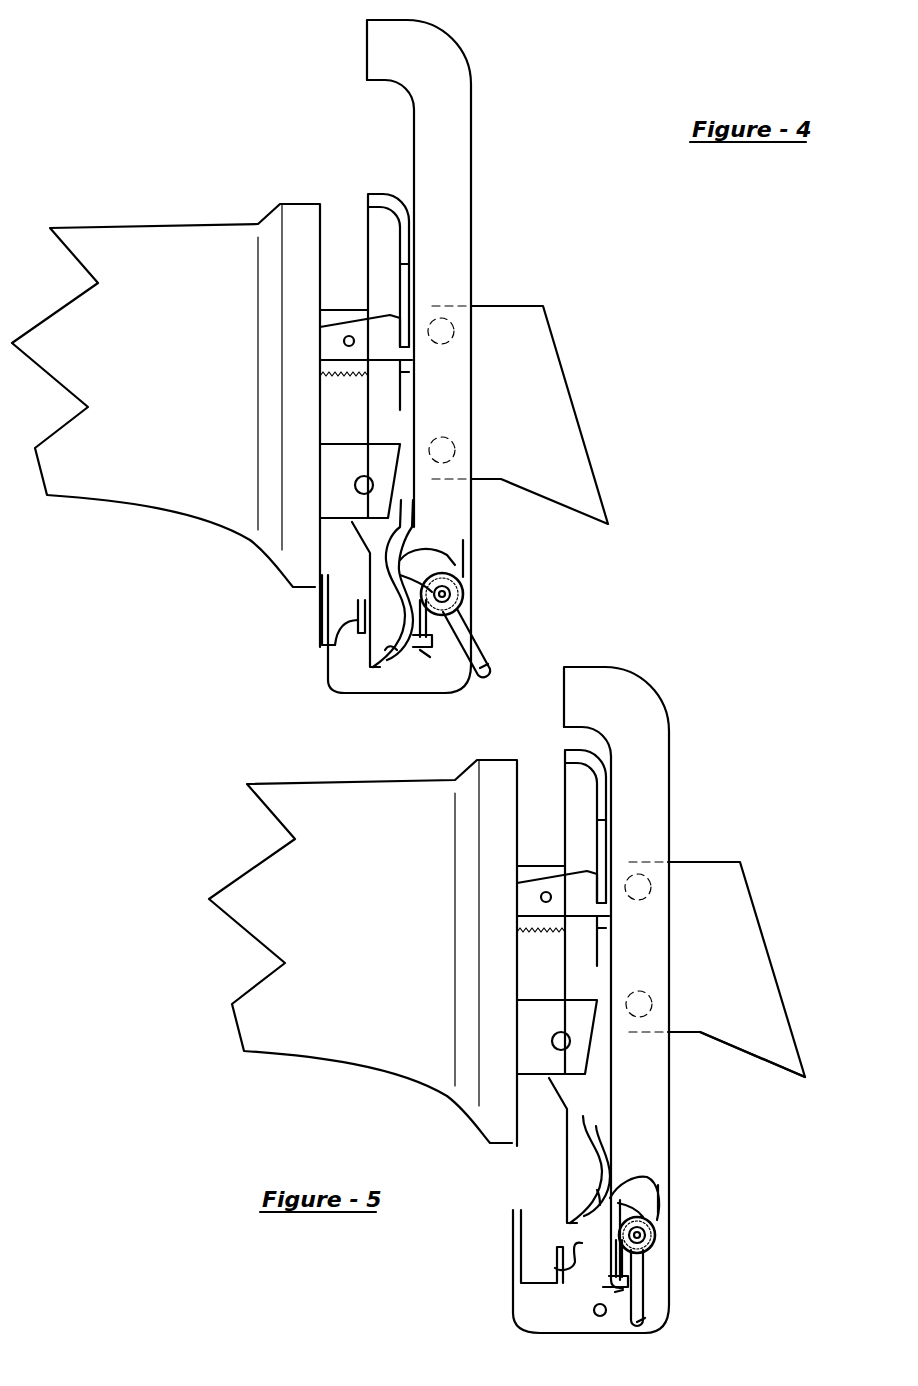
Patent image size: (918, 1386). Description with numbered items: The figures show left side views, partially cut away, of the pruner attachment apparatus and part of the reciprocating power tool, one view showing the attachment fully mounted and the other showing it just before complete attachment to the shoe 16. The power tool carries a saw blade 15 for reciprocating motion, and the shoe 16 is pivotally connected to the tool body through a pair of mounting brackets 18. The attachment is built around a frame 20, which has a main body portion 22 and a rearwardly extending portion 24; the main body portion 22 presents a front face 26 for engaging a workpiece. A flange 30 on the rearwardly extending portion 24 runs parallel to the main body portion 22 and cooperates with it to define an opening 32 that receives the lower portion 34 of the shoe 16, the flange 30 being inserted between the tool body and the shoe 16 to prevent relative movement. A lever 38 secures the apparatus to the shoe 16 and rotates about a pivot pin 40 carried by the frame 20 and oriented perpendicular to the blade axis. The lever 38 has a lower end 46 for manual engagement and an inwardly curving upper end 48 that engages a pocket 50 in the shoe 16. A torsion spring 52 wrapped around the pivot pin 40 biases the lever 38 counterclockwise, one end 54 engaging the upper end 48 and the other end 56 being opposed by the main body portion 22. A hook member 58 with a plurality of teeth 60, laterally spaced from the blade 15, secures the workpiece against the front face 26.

In FIG. 4, the saw blade 15 is at (333, 317).
In FIG. 5, the saw blade 15 is at (530, 873).
In FIG. 5, the shoe 16 is at (583, 760).
In FIG. 4, the mounting brackets 18 is at (333, 472).
In FIG. 5, the mounting brackets 18 is at (530, 1028).
In FIG. 4, the frame 20 is at (418, 382).
In FIG. 5, the frame 20 is at (620, 1001).
In FIG. 4, the main body portion 22 is at (456, 88).
In FIG. 5, the main body portion 22 is at (640, 722).
In FIG. 4, the rearwardly extending portion 24 is at (388, 699).
In FIG. 5, the rearwardly extending portion 24 is at (575, 1330).
In FIG. 4, the front face 26 is at (473, 233).
In FIG. 4, the flange 30 is at (317, 617).
In FIG. 5, the flange 30 is at (513, 1225).
In FIG. 4, the opening 32 is at (330, 655).
In FIG. 5, the opening 32 is at (582, 1243).
In FIG. 4, the lower portion 34 is at (397, 650).
In FIG. 5, the lower portion 34 is at (597, 1190).
In FIG. 4, the lever 38 is at (463, 600).
In FIG. 5, the lever 38 is at (647, 1275).
In FIG. 4, the pivot pin 40 is at (462, 588).
In FIG. 5, the pivot pin 40 is at (653, 1243).
In FIG. 4, the lower end 46 is at (484, 672).
In FIG. 5, the lower end 46 is at (650, 1320).
In FIG. 4, the upper end 48 is at (410, 565).
In FIG. 5, the upper end 48 is at (647, 1177).
In FIG. 4, the pocket 50 is at (377, 540).
In FIG. 5, the pocket 50 is at (607, 1113).
In FIG. 4, the torsion spring 52 is at (453, 563).
In FIG. 5, the torsion spring 52 is at (663, 1231).
In FIG. 4, the one end 54 is at (460, 645).
In FIG. 5, the one end 54 is at (650, 1258).
In FIG. 4, the other end 56 is at (420, 650).
In FIG. 5, the other end 56 is at (615, 1292).
In FIG. 4, the hook member 58 is at (588, 370).
In FIG. 5, the hook member 58 is at (777, 925).
In FIG. 5, the teeth 60 is at (775, 1055).